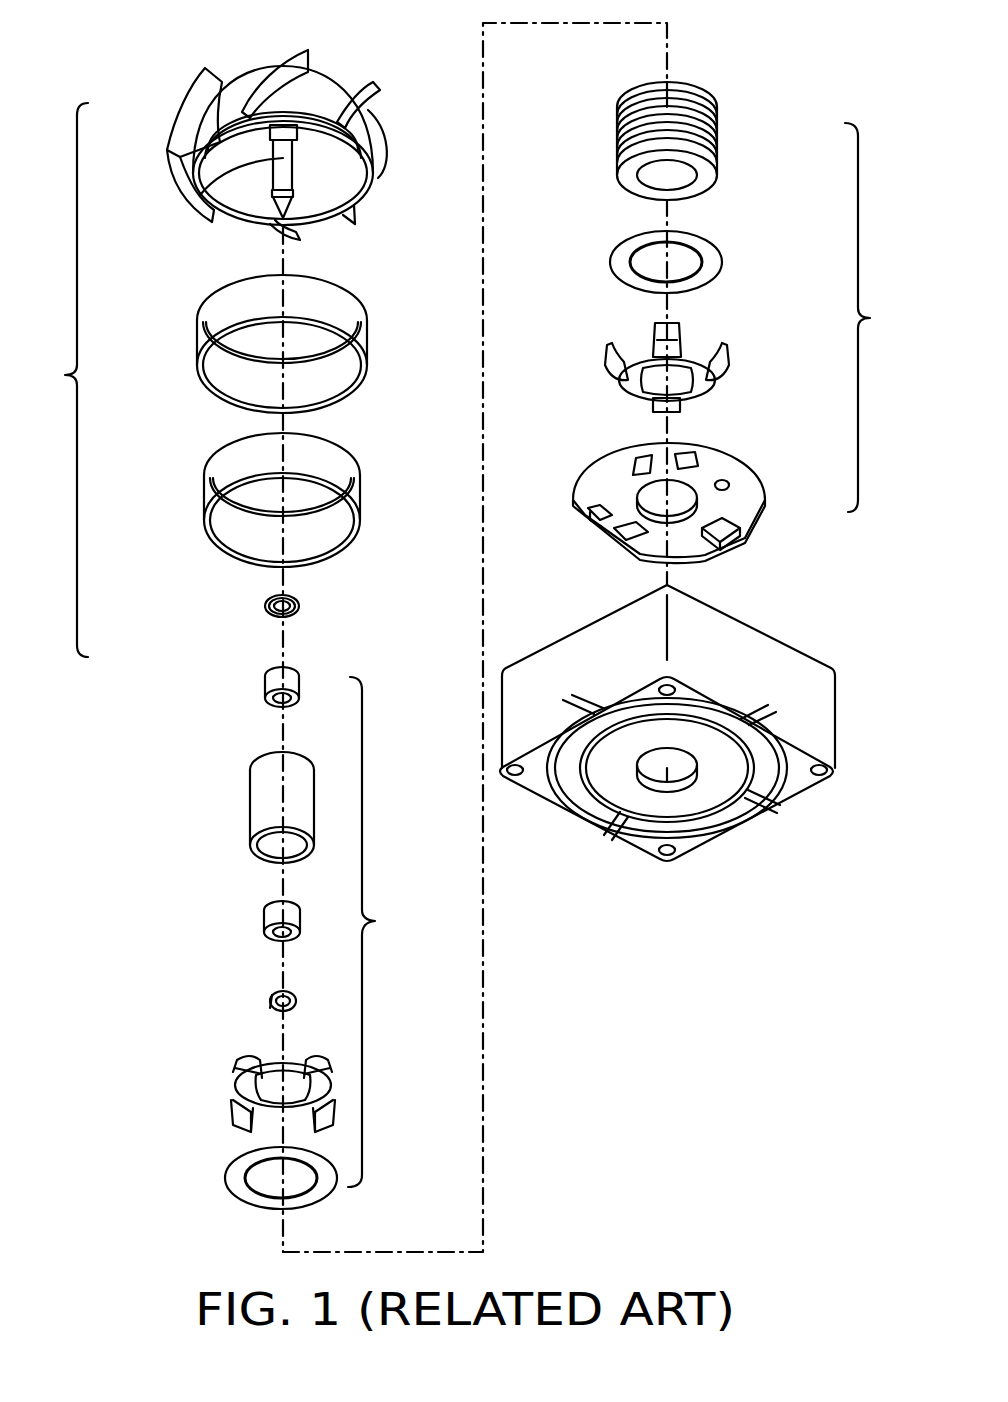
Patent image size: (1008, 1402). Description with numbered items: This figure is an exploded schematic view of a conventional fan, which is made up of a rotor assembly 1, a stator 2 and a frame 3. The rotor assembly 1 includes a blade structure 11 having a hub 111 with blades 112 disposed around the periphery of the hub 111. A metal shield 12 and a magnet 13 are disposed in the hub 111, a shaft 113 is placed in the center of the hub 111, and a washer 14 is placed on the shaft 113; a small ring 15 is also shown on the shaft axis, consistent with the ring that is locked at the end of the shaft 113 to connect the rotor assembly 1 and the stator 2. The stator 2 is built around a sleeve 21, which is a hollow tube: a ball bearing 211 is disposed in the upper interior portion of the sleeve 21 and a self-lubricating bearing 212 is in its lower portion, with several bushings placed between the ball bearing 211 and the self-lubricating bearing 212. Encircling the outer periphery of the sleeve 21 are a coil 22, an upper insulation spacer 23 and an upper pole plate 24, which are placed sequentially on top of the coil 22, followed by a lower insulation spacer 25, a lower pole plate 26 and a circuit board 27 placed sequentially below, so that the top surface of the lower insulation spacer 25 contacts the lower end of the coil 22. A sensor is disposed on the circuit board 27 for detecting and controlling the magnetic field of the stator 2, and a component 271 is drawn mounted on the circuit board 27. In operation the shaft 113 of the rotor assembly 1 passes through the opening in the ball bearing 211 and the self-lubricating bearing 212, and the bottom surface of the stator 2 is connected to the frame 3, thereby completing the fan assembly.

The rotor assembly 1 is at (63, 380).
The stator 2 is at (621, 655).
The frame 3 is at (750, 633).
The blade structure 11 is at (242, 120).
The hub 111 is at (246, 70).
The blades 112 is at (185, 110).
The shaft 113 is at (280, 175).
The metal shield 12 is at (197, 333).
The magnet 13 is at (204, 495).
The washer 14 is at (265, 605).
The retaining clip 15 is at (273, 997).
The sleeve 21 is at (250, 803).
The ball bearing 211 is at (265, 682).
The self-lubricating bearing 212 is at (264, 918).
The coil 22 is at (718, 132).
The upper insulation spacer 23 is at (225, 1177).
The upper pole plate 24 is at (232, 1070).
The lower insulation spacer 25 is at (722, 260).
The lower pole plate 26 is at (725, 368).
The circuit board 27 is at (709, 509).
The electronic component 271 is at (735, 542).